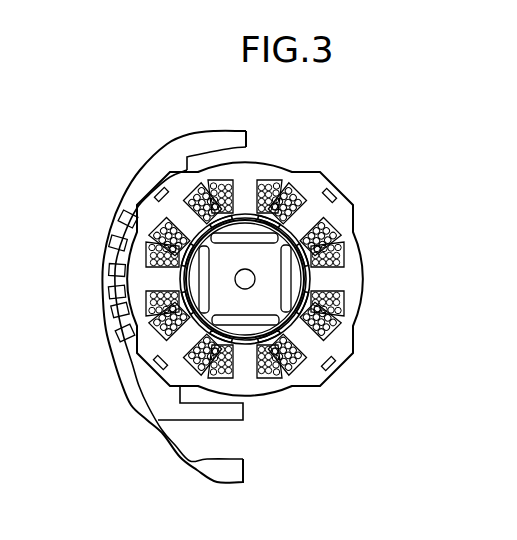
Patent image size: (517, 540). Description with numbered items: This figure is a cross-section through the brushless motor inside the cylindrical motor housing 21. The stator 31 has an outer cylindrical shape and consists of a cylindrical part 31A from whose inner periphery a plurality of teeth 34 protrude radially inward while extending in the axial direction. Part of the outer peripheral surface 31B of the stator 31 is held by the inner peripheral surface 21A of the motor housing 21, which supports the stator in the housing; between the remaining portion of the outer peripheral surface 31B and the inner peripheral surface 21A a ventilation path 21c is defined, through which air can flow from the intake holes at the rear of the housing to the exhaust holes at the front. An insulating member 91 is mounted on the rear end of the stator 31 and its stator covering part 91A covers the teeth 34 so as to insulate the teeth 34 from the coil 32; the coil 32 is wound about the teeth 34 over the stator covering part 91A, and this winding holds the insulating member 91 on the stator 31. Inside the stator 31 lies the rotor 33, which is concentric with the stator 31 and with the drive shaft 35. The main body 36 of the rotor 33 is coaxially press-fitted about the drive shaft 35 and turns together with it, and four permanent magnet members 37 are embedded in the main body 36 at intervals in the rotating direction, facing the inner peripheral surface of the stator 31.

The motor housing 21 is at (170, 158).
The inner peripheral surface 21A is at (240, 149).
The ventilation path 21c is at (120, 333).
The stator 31 is at (309, 255).
The cylindrical part 31A is at (352, 232).
The outer peripheral surface 31B is at (352, 264).
The coil 32 is at (316, 200).
The teeth 34 is at (323, 278).
The stator covering part 91A is at (375, 197).
The insulating member 91 is at (333, 219).
The rotor 33 is at (315, 331).
The drive shaft 35 is at (254, 282).
The main body 36 is at (287, 321).
The permanent magnet members 37 is at (258, 322).